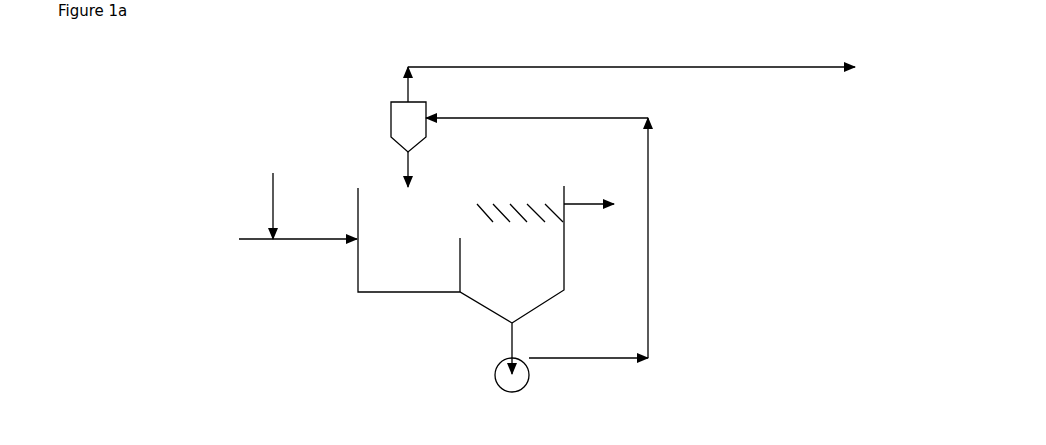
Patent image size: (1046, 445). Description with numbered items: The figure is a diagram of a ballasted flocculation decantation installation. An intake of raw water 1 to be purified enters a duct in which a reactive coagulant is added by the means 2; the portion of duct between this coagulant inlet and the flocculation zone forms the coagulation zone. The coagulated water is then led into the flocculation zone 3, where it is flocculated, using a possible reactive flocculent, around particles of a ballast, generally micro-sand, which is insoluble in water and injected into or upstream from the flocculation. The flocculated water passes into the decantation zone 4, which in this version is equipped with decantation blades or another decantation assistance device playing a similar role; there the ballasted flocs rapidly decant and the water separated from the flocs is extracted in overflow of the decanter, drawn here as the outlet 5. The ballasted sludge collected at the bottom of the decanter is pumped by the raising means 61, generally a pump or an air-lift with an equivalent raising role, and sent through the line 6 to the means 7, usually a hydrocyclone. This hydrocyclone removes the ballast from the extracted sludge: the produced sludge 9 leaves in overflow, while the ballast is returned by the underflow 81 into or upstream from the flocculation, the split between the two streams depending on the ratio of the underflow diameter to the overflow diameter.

The intake of raw water 1 is at (280, 266).
The means leading reactive coagulant 2 is at (238, 197).
The flocculation zone 3 is at (435, 273).
The decantation zone 4 is at (520, 254).
The overflow outlet 5 is at (598, 178).
The recycle line 6 is at (571, 238).
The raising means 61 is at (486, 384).
The means for extracting produced sludge 7 is at (374, 127).
The underflow 81 is at (476, 222).
The produced sludge 9 is at (631, 41).